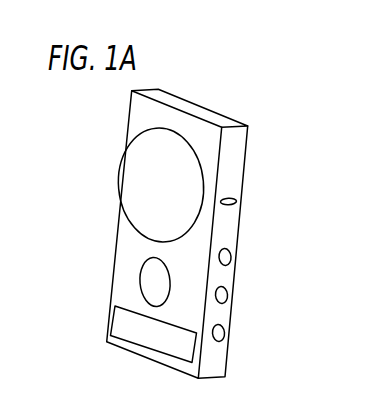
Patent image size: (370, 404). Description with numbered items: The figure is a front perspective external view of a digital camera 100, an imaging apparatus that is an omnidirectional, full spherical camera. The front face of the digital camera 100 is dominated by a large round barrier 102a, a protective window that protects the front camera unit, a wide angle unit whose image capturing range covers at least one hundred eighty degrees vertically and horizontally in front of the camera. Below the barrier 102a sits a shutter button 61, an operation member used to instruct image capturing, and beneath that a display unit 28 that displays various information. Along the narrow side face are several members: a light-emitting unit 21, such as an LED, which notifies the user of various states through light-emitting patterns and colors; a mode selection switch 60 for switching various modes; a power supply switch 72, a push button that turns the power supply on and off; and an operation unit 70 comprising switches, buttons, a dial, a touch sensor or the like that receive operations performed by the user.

The digital camera 100 is at (172, 100).
The barrier 102a is at (131, 182).
The shutter button 61 is at (147, 283).
The display unit 28 is at (145, 334).
The light-emitting unit 21 is at (237, 197).
The mode selection switch 60 is at (231, 250).
The power supply switch 72 is at (228, 288).
The operation unit 70 is at (225, 326).